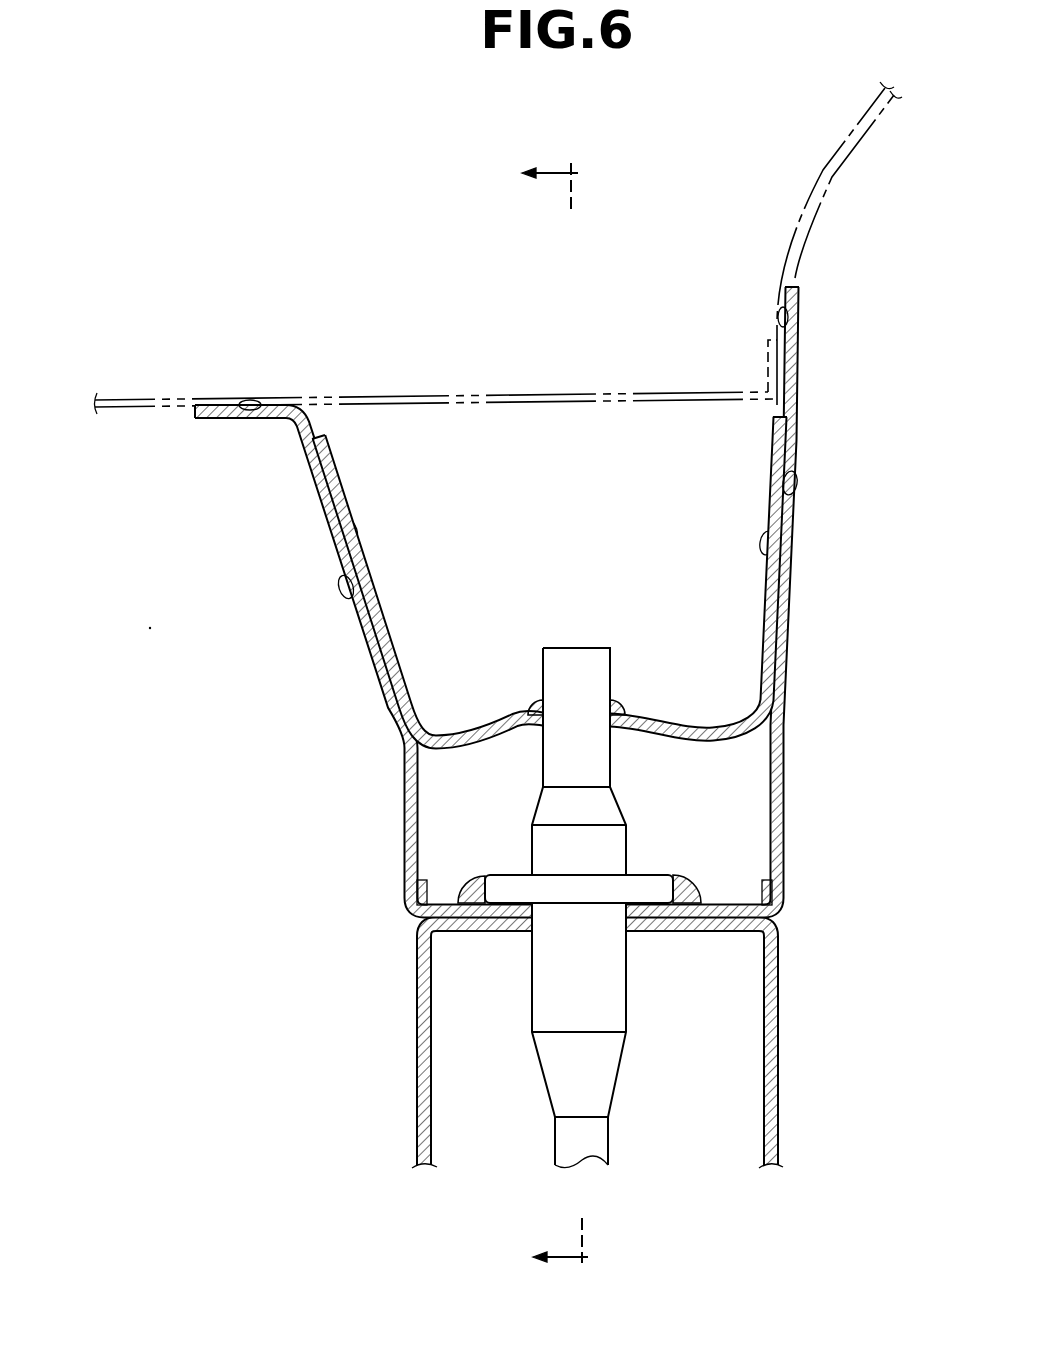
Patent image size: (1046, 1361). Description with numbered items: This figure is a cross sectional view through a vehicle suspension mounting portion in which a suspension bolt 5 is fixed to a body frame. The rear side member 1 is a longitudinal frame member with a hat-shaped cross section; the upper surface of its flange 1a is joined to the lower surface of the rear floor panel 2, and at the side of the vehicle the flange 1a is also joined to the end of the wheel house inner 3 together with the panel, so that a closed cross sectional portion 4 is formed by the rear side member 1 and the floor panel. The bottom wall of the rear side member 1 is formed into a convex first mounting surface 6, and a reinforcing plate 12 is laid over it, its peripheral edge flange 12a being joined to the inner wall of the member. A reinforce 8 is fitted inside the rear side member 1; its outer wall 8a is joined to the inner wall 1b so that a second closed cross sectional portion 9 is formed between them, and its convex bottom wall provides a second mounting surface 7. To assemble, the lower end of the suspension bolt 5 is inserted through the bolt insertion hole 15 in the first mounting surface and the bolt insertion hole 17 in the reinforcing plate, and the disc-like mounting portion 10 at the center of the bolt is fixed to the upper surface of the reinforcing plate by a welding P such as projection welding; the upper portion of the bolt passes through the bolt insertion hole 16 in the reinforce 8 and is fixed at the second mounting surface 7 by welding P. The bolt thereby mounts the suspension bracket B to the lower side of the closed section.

The rear side member 1 is at (388, 760).
The flange 1a is at (262, 410).
The inner wall 1b is at (343, 547).
The rear floor panel 2 is at (490, 393).
The wheel house inner 3 is at (822, 168).
The closed cross sectional portion 4 is at (553, 491).
The suspension bolt 5 is at (612, 1070).
The first mounting surface 6 is at (724, 930).
The second mounting surface 7 is at (645, 712).
The reinforce 8 is at (555, 617).
The outer wall 8a is at (366, 588).
The second closed cross sectional portion 9 is at (661, 828).
The mounting portion 10 is at (634, 894).
The reinforcing plate 12 is at (768, 882).
The peripheral edge flange 12a is at (408, 892).
The bolt insertion hole 15 is at (486, 981).
The bolt insertion hole 16 is at (527, 738).
The bolt insertion hole 17 is at (518, 947).
The welding P is at (532, 699).
The suspension bracket B is at (822, 1028).